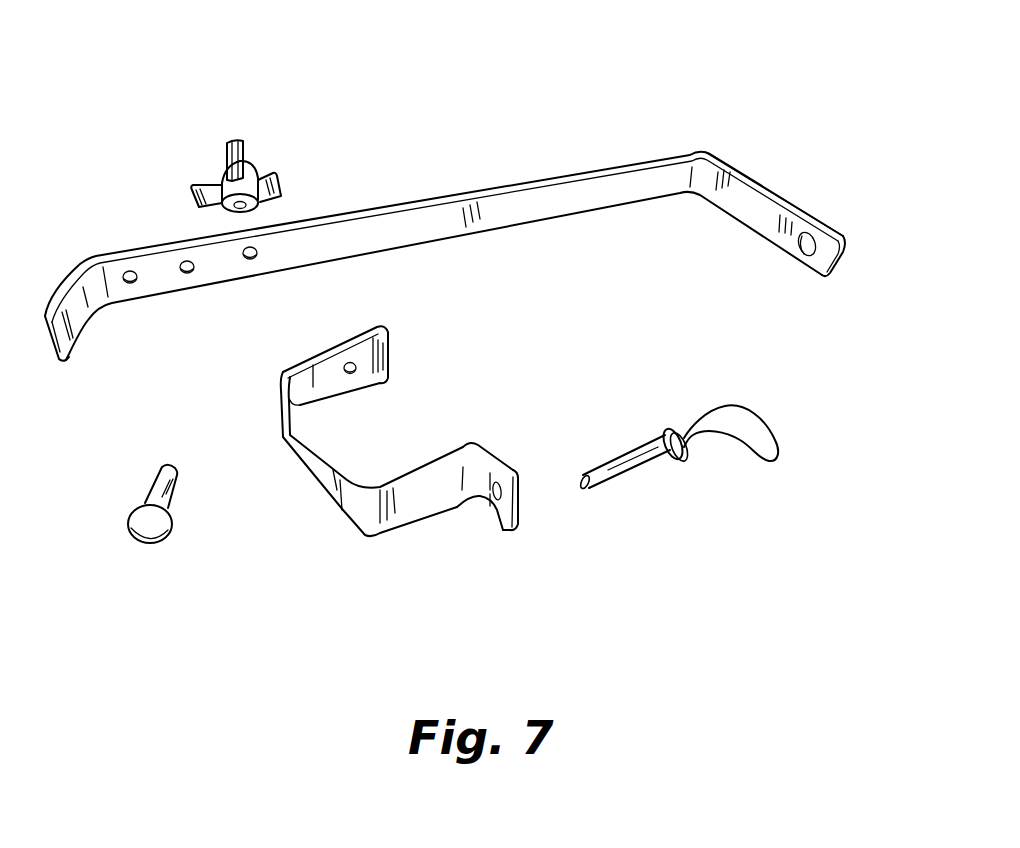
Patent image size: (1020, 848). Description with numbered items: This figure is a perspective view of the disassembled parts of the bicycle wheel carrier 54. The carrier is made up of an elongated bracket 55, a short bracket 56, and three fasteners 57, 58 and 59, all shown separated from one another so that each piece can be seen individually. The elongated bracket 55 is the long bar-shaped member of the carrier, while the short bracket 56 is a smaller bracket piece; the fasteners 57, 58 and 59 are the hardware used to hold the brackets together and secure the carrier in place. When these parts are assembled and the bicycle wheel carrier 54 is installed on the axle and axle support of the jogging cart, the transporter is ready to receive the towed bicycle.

The bicycle wheel carrier 54 is at (731, 83).
The elongated bracket 55 is at (523, 192).
The short bracket 56 is at (387, 357).
The fastener 57 is at (653, 443).
The fastener 58 is at (170, 522).
The fastener 59 is at (225, 168).